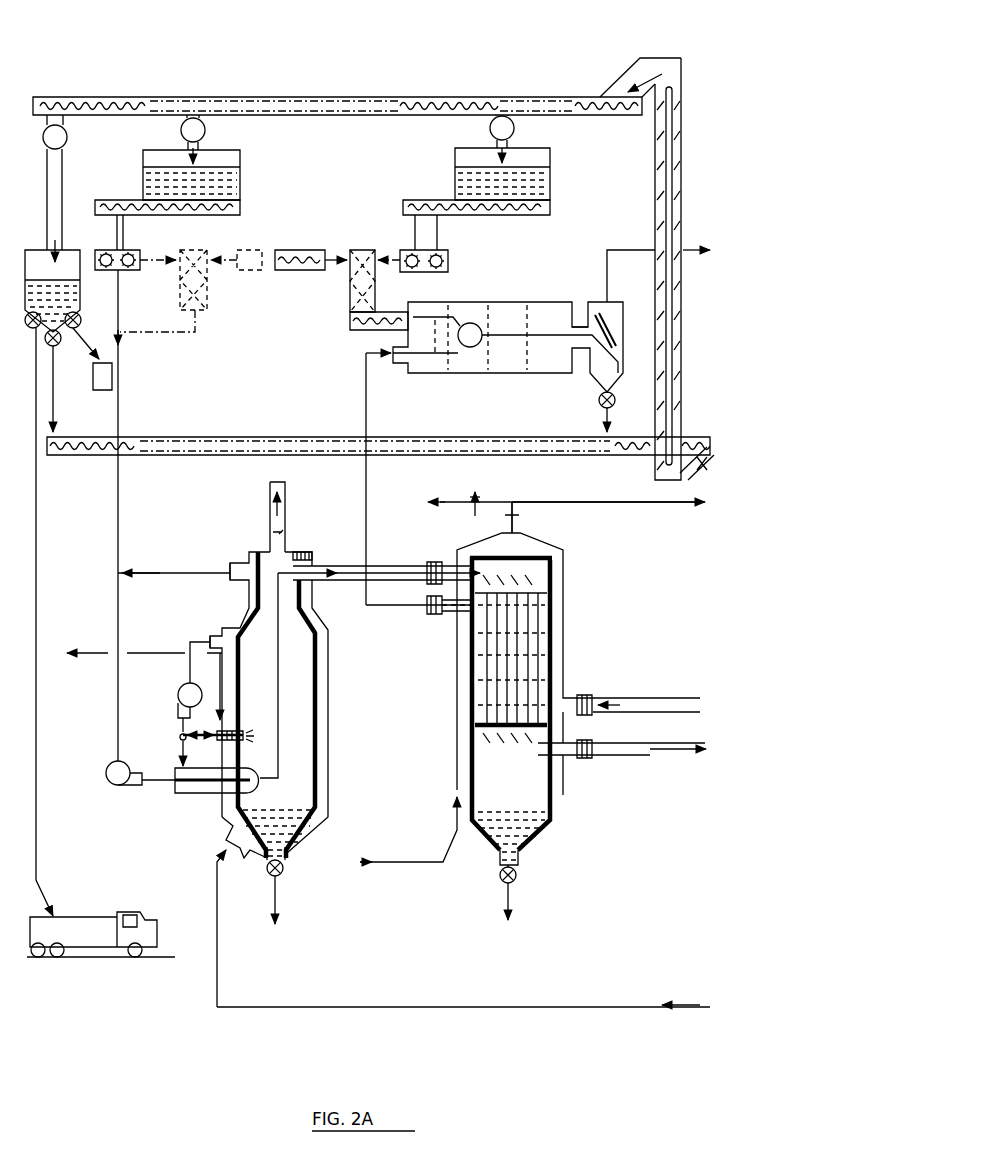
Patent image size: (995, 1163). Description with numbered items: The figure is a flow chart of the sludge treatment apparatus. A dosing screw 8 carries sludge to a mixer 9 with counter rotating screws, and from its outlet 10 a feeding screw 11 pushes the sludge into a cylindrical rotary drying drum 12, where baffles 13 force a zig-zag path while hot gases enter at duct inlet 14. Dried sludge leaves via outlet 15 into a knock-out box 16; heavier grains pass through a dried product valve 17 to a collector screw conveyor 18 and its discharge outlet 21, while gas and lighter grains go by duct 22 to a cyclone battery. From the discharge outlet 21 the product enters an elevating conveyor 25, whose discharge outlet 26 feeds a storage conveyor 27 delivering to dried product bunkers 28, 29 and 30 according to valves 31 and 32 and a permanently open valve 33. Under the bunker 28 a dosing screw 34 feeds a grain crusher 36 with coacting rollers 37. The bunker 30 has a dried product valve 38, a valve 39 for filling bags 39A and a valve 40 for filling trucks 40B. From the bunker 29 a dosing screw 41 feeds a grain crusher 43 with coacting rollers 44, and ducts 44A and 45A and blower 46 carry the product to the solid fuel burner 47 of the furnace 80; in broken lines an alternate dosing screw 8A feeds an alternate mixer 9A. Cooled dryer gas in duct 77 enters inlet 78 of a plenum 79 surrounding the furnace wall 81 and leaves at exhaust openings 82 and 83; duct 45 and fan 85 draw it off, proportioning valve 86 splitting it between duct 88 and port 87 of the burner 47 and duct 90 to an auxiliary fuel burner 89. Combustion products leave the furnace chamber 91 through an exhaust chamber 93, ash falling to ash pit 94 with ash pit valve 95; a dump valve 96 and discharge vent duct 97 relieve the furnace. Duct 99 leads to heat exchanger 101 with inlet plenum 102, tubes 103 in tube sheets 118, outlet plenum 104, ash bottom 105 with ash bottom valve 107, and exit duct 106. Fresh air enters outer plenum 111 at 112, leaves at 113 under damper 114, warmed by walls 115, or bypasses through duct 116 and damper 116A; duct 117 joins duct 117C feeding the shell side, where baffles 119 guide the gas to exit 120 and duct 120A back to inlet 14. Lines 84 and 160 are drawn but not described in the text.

The dosing screw 8 is at (296, 272).
The alternate dosing screw 8A is at (238, 272).
The mixer 9 is at (347, 288).
The alternate mixer 9A is at (209, 298).
The outlet 10 is at (348, 320).
The feeding screw 11 is at (368, 333).
The rotary drying drum 12 is at (496, 302).
The baffles 13 is at (478, 304).
The duct inlet 14 is at (386, 360).
The outlet 15 is at (573, 308).
The knock-out box 16 is at (626, 336).
The dried product valve 17 is at (599, 402).
The collector screw conveyor 18 is at (617, 437).
The discharge outlet 21 is at (697, 474).
The duct 22 is at (607, 268).
The elevating conveyor 25 is at (654, 188).
The discharge outlet 26 is at (656, 57).
The storage conveyor 27 is at (547, 97).
The dried product bunker 28 is at (552, 158).
The dried product bunker 29 is at (242, 160).
The dried product bunker 30 is at (68, 250).
The valve 31 is at (514, 128).
The valve 32 is at (205, 130).
The permanently open valve 33 is at (67, 137).
The dosing screw 34 is at (515, 217).
The grain crusher 36 is at (449, 258).
The coacting rollers 37 is at (430, 270).
The dried product valve 38 is at (56, 344).
The dried product valve 39 is at (79, 318).
The bags 39A is at (104, 391).
The dried product valve 40 is at (38, 344).
The trucks 40B is at (86, 915).
The dosing screw 41 is at (198, 217).
The grain crusher 43 is at (142, 268).
The coacting rollers 44 is at (122, 276).
The duct 44A is at (118, 484).
The duct 45 is at (166, 572).
The duct 45A is at (118, 720).
The blower 46 is at (122, 786).
The solid fuel burner 47 is at (208, 794).
The duct 77 is at (614, 1004).
The inlet 78 is at (228, 864).
The plenum 79 is at (226, 830).
The solid fuel furnace 80 is at (332, 730).
The furnace wall 81 is at (327, 693).
The exhaust opening 82 is at (226, 566).
The exhaust opening 83 is at (202, 630).
The gas outlet line 84 is at (124, 570).
The fan 85 is at (190, 691).
The proportioning valve 86 is at (180, 730).
The port 87 is at (182, 768).
The duct 88 is at (180, 740).
The auxiliary fuel burner 89 is at (248, 742).
The duct 90 is at (204, 736).
The furnace chamber 91 is at (290, 653).
The exhaust chamber 93 is at (285, 597).
The ash pit 94 is at (314, 832).
The ash pit valve 95 is at (284, 876).
The dump valve 96 is at (272, 532).
The discharge vent duct 97 is at (276, 494).
The duct 99 is at (374, 564).
The heat exchanger 101 is at (565, 630).
The inlet plenum 102 is at (545, 566).
The tubes 103 is at (537, 638).
The outlet plenum 104 is at (535, 765).
The ash bottom 105 is at (528, 832).
The duct 106 is at (662, 757).
The ash bottom valve 107 is at (516, 874).
The outer plenum 111 is at (555, 602).
The fresh air inlet 112 is at (455, 794).
The fresh air exit 113 is at (507, 522).
The damper 114 is at (512, 514).
The walls 115 is at (553, 670).
The duct 116 is at (444, 502).
The damper 116A is at (477, 496).
The duct 117 is at (647, 508).
The duct 117C is at (632, 706).
The tube sheets 118 is at (547, 590).
The baffles 119 is at (485, 652).
The exit 120 is at (476, 608).
The duct 120A is at (356, 504).
The air line 160 is at (88, 658).